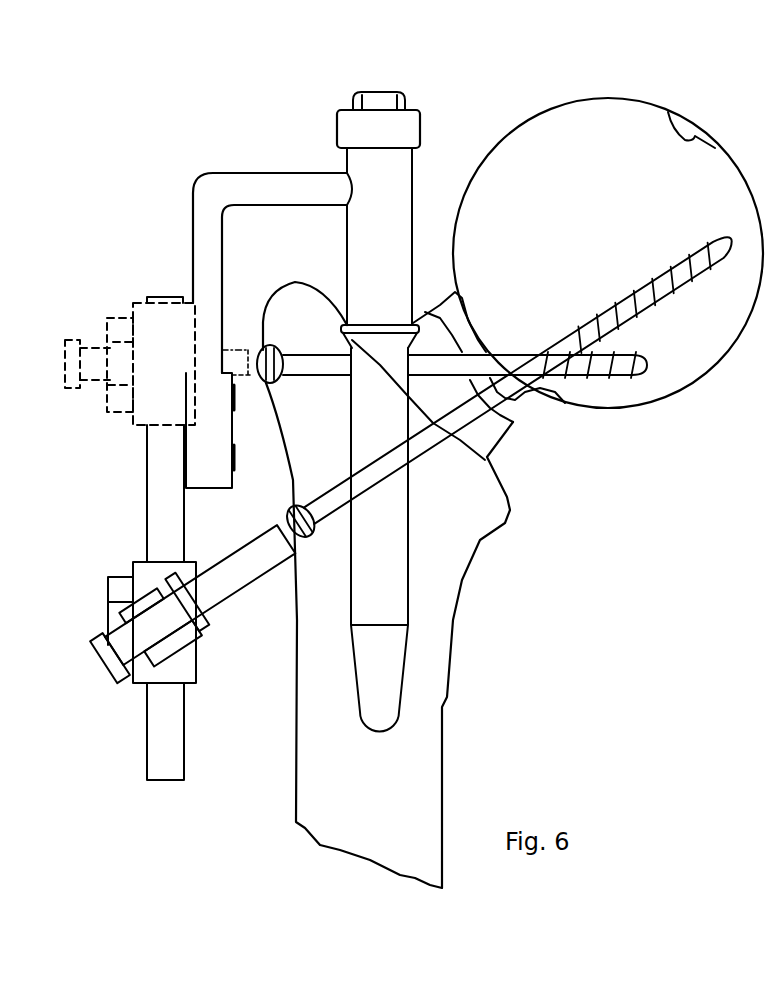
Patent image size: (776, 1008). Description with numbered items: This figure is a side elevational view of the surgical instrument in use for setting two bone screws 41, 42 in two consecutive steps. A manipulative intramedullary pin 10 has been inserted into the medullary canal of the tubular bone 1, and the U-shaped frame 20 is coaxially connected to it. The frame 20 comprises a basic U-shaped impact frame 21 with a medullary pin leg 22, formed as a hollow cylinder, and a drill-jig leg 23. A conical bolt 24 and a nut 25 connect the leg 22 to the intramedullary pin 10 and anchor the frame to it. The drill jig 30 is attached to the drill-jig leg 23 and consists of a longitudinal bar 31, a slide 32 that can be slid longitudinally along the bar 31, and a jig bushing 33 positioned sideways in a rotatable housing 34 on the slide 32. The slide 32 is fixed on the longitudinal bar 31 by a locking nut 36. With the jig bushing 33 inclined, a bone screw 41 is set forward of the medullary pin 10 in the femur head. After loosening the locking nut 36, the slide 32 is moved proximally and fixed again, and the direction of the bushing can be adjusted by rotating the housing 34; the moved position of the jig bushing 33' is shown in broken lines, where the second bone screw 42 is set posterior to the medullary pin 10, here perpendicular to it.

The tubular bone 1 is at (518, 666).
The manipulative intramedullary pin 10 is at (392, 594).
The U-shaped frame 20 is at (284, 157).
The U-shaped impact frame 21 is at (222, 190).
The medullary pin leg 22 is at (392, 192).
The drill-jig leg 23 is at (200, 462).
The conical bolt 24 is at (377, 103).
The nut 25 is at (355, 132).
The drill jig 30 is at (85, 645).
The longitudinal bar 31 is at (168, 477).
The slide 32 is at (145, 577).
The jig bushing 33 is at (192, 604).
The jig bushing in moved position 33' is at (97, 345).
The housing 34 is at (195, 638).
The locking nut 36 is at (122, 592).
The bone screw 41 is at (655, 285).
The bone screw 42 is at (613, 365).